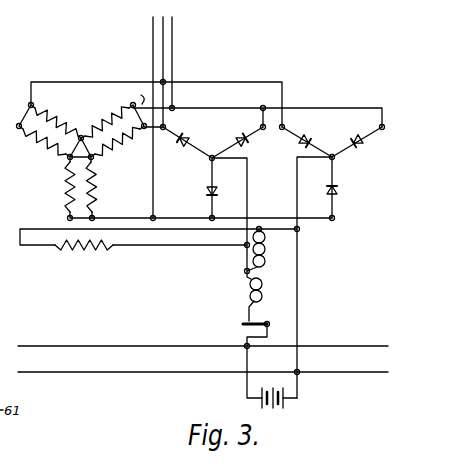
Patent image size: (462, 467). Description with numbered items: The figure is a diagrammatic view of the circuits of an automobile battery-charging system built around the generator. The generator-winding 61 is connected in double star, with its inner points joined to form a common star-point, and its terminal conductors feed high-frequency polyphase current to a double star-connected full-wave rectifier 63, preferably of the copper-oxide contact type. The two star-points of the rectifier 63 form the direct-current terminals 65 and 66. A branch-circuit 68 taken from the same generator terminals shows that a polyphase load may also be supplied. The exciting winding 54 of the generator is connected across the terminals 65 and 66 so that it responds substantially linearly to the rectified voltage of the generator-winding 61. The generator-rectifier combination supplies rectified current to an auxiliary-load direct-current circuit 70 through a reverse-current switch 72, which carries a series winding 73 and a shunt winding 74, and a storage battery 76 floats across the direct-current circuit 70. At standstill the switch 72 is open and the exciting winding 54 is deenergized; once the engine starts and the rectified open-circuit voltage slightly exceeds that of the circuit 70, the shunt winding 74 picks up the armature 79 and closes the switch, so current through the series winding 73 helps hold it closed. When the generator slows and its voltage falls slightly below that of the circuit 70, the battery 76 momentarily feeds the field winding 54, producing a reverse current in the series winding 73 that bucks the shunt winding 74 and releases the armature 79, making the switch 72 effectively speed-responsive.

The branch-circuit 68 is at (157, 41).
The generator-winding 61 is at (47, 174).
The double star-connected full-wave rectifier 63 is at (283, 159).
The direct-current terminal 66 is at (247, 188).
The direct-current terminal 65 is at (319, 159).
The exciting winding 54 is at (82, 249).
The shunt winding 74 is at (268, 250).
The series winding 73 is at (275, 286).
The reverse-current switch 72 is at (245, 321).
The armature 79 is at (243, 326).
The direct-current circuit 70 is at (87, 345).
The storage battery 76 is at (286, 402).